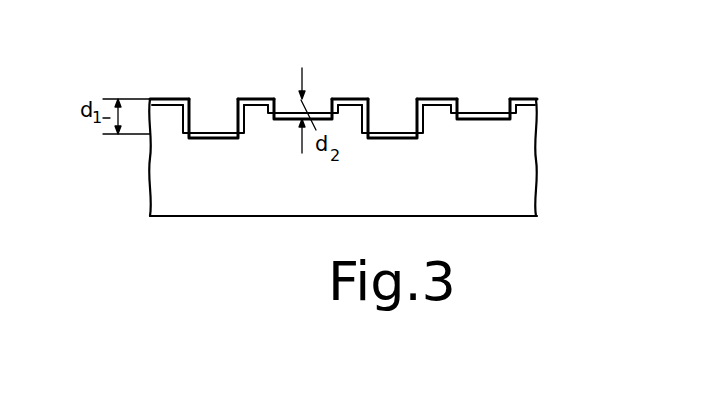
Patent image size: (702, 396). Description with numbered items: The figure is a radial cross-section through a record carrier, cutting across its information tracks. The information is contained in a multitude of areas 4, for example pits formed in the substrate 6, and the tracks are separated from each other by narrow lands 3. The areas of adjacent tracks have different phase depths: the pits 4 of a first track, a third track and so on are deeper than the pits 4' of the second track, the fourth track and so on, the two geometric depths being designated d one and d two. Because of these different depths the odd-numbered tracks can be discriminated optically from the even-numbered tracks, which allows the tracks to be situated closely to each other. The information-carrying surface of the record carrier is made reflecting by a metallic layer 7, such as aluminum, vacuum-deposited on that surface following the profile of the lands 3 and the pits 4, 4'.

The land 3 is at (262, 97).
The area 4 is at (303, 100).
The pit 4' is at (392, 75).
The substrate 6 is at (488, 203).
The metallic layer 7 is at (158, 99).